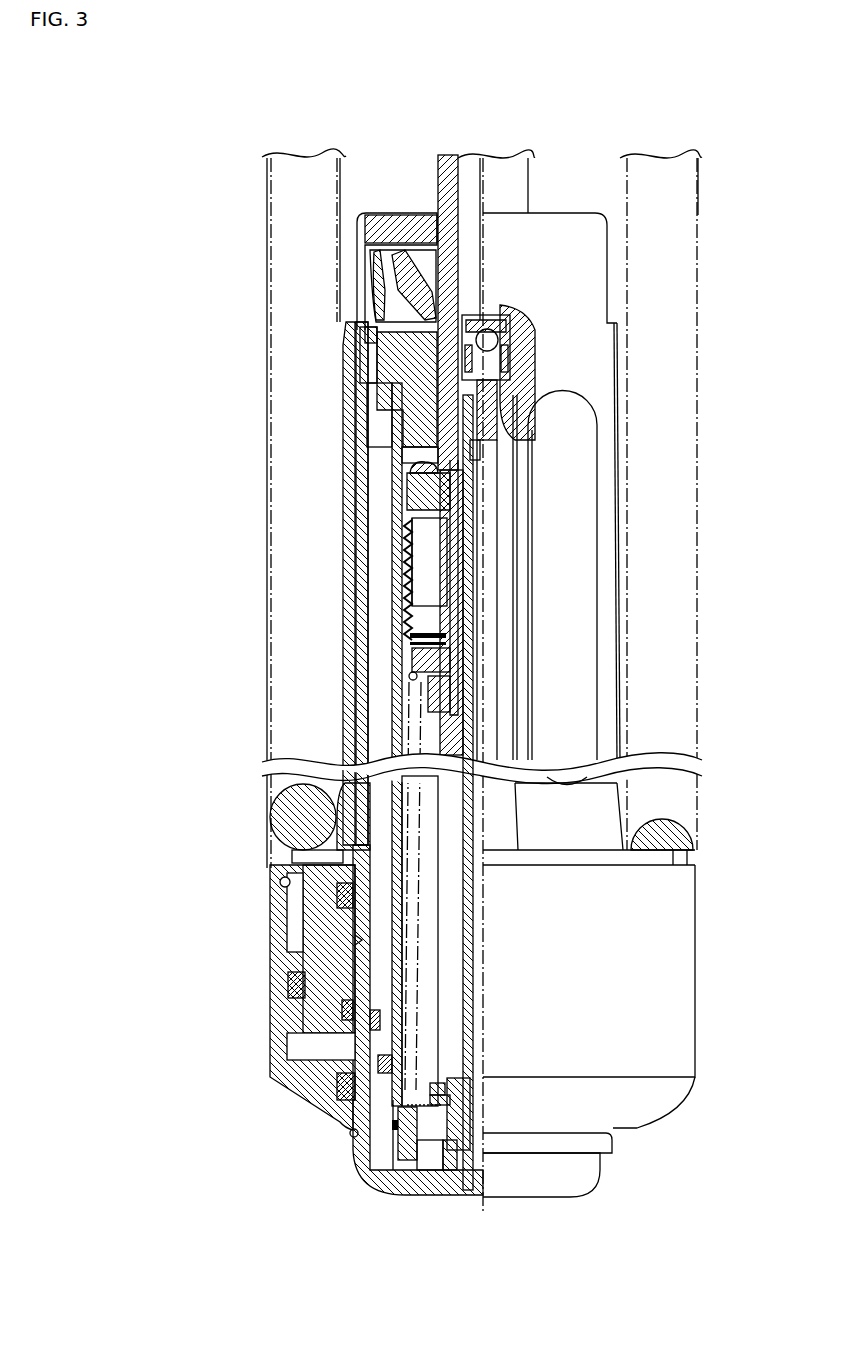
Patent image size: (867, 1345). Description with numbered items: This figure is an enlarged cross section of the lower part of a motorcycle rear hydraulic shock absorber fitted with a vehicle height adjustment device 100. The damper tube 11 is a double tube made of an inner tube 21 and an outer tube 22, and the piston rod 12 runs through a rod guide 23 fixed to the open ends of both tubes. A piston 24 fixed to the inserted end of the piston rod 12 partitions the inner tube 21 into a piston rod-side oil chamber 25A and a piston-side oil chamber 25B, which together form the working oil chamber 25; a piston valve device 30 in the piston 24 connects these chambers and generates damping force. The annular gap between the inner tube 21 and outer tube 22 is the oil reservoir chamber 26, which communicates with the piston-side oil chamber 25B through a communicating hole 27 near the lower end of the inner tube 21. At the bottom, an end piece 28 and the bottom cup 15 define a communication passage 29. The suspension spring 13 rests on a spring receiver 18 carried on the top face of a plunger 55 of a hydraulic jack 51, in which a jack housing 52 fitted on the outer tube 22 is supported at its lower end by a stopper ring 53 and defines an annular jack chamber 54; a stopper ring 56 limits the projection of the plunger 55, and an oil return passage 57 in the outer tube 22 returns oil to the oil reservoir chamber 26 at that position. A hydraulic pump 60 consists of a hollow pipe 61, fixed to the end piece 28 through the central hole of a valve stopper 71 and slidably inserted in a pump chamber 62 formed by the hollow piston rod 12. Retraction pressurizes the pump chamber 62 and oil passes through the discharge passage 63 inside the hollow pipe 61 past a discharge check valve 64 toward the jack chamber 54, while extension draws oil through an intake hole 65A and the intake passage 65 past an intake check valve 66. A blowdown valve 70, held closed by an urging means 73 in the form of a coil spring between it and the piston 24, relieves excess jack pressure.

The damper tube 11 is at (362, 664).
The piston rod 12 is at (438, 180).
The suspension spring 13 is at (290, 812).
The bottom cup 15 is at (372, 1162).
The spring receiver 18 is at (297, 857).
The inner tube 21 is at (398, 690).
The outer tube 22 is at (362, 717).
The rod guide 23 is at (393, 362).
The piston 24 is at (410, 550).
The working oil chamber 25 is at (420, 435).
The piston rod-side oil chamber 25A is at (420, 415).
The piston-side oil chamber 25B is at (435, 795).
The oil reservoir chamber 26 is at (375, 823).
The communicating hole 27 is at (400, 988).
The end piece 28 is at (400, 1162).
The communication passage 29 is at (457, 1165).
The piston valve device 30 is at (390, 588).
The hydraulic jack 51 is at (276, 930).
The jack housing 52 is at (278, 1022).
The stopper ring 53 is at (350, 1137).
The jack chamber 54 is at (300, 1050).
The plunger 55 is at (320, 905).
The stopper ring 56 is at (282, 884).
The oil return passage 57 is at (353, 941).
The hydraulic pump 60 is at (493, 302).
The hollow pipe 61 is at (470, 898).
The pump chamber 62 is at (470, 235).
The discharge passage 63 is at (530, 405).
The discharge check valve 64 is at (540, 330).
The intake passage 65 is at (515, 428).
The intake hole 65A is at (475, 455).
The intake check valve 66 is at (381, 348).
The blowdown valve 70 is at (412, 1097).
The valve stopper 71 is at (470, 1060).
The urging means 73 is at (410, 745).
The vehicle height adjustment device 100 is at (268, 994).